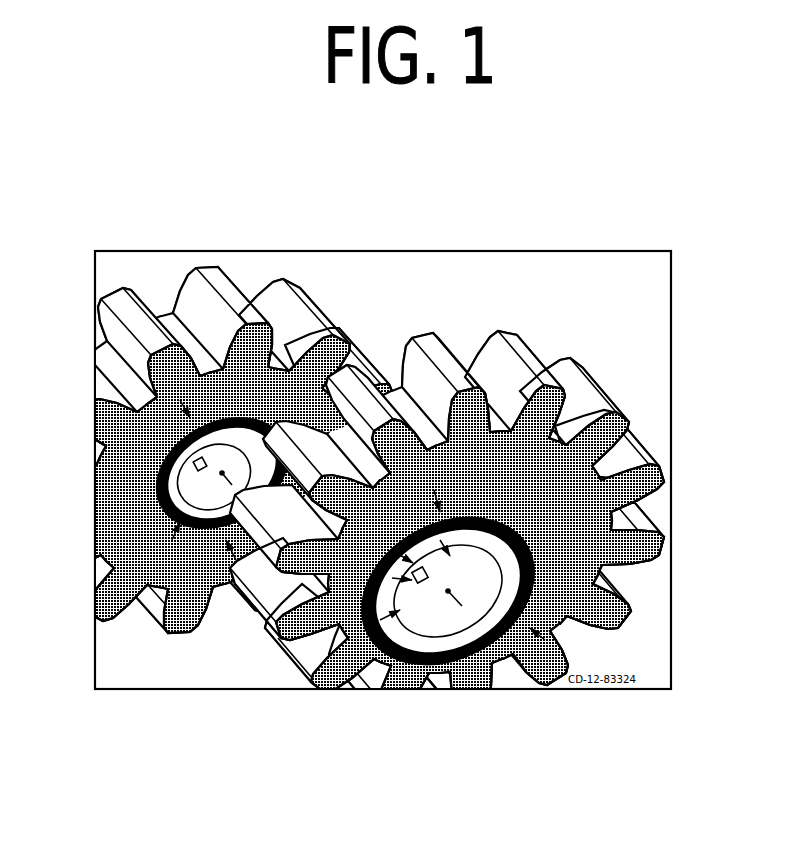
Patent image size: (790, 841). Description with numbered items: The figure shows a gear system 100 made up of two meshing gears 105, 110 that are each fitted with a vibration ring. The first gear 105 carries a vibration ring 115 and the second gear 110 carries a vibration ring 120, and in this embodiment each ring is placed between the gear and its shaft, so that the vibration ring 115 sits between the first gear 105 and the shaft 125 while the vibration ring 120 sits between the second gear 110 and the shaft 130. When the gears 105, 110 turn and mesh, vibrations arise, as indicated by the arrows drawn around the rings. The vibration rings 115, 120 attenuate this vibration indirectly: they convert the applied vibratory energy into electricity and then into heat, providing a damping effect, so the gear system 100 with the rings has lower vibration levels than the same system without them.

The gear system 100 is at (122, 109).
The gear 105 is at (258, 366).
The gear 110 is at (527, 655).
The vibration ring 115 is at (228, 415).
The vibration ring 120 is at (400, 662).
The shaft 125 is at (178, 488).
The shaft 130 is at (372, 632).